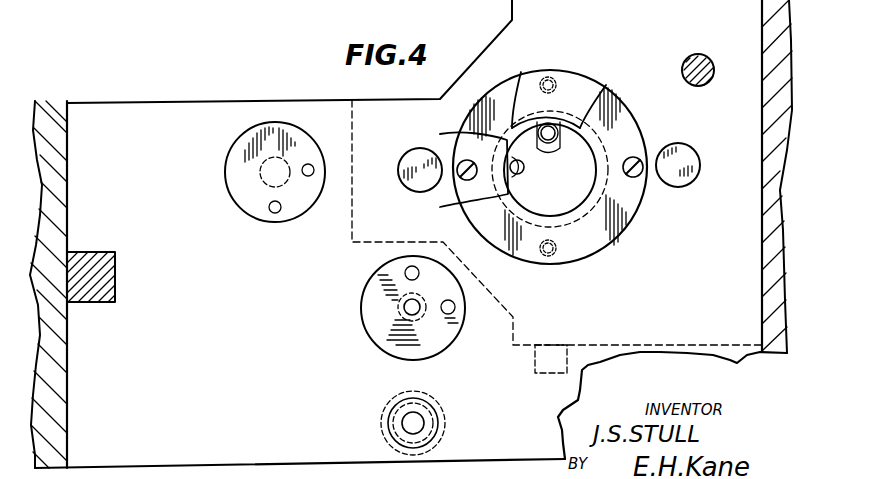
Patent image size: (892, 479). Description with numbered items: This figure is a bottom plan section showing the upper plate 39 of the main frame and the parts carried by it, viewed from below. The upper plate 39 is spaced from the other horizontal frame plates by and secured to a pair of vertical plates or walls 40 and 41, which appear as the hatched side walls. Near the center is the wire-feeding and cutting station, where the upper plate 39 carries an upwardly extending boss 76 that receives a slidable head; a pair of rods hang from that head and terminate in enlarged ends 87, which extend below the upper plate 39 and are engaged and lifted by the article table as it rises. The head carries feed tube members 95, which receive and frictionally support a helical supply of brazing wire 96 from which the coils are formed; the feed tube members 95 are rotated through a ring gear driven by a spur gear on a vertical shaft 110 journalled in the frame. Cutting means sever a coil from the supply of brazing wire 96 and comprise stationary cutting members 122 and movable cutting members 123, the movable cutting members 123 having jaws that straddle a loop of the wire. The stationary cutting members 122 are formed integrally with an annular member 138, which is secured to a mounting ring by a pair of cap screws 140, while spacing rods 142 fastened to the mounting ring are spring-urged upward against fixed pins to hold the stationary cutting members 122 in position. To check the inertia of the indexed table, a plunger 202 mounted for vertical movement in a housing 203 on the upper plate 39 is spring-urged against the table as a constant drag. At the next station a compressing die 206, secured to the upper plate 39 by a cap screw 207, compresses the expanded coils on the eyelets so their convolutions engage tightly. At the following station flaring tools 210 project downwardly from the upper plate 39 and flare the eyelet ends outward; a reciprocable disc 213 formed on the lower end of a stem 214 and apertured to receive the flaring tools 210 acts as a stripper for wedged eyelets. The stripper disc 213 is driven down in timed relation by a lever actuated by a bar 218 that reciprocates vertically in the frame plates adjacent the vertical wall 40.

The upper plate 39 is at (162, 115).
The vertical plate or wall 40 is at (66, 155).
The vertical plate or wall 41 is at (761, 280).
The boss 76 is at (528, 349).
The enlarged ends of rods 87 is at (408, 158).
The feed tube members 95 is at (525, 169).
The brazing wire 96 is at (524, 156).
The vertical shaft 110 is at (698, 55).
The stationary cutting members 122 is at (475, 134).
The movable cutting members 123 is at (453, 121).
The annular member 138 is at (610, 230).
The cap screws 140 is at (460, 160).
The spacing rods 142 is at (558, 82).
The plunger 202 is at (409, 420).
The housing 203 is at (399, 428).
The compressing die 206 is at (378, 327).
The cap screw 207 is at (419, 272).
The flaring tools 210 is at (313, 174).
The reciprocable disc 213 is at (231, 160).
The stem 214 is at (259, 173).
The bar 218 is at (95, 304).